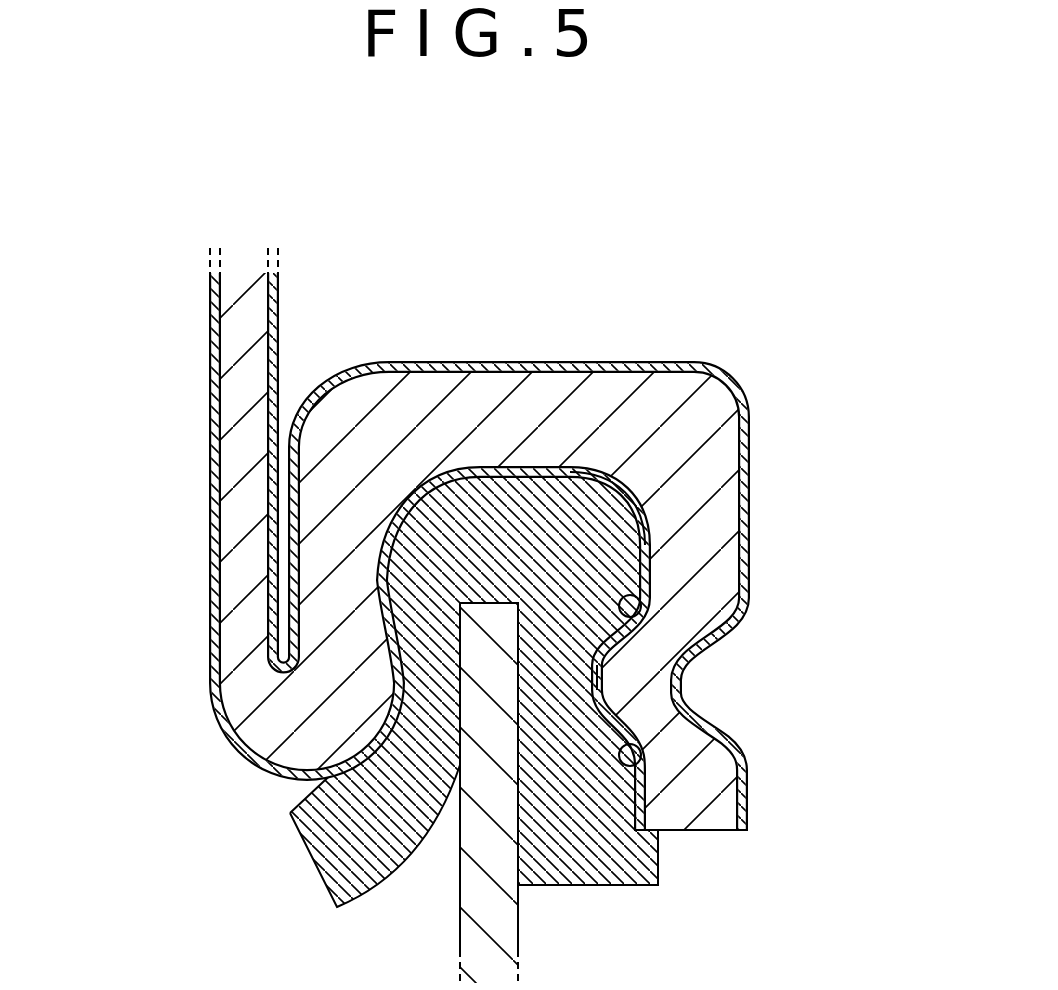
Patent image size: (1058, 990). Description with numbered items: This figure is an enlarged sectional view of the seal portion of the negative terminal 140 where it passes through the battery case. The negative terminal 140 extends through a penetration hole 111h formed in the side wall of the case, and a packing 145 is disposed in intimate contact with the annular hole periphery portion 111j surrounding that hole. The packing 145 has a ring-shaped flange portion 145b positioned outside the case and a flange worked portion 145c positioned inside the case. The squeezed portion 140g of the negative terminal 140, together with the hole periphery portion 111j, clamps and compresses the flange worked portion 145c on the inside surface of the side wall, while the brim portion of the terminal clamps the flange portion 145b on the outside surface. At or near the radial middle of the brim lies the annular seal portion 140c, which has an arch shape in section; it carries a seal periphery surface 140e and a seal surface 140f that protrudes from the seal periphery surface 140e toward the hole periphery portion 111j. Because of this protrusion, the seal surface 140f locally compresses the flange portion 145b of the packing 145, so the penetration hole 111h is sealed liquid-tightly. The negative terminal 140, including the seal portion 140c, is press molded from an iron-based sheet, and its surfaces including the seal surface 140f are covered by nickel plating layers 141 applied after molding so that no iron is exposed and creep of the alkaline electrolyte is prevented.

The negative terminal 140 is at (385, 388).
The nickel plating layer 141 is at (687, 363).
The squeezed portion 140g is at (233, 473).
The seal portion 140c is at (651, 648).
The seal periphery surface 140e is at (650, 590).
The seal surface 140f is at (617, 720).
The penetration hole 111h is at (500, 617).
The hole periphery portion 111j is at (565, 580).
The packing 145 is at (633, 795).
The flange portion 145b is at (568, 770).
The flange worked portion 145c is at (435, 707).